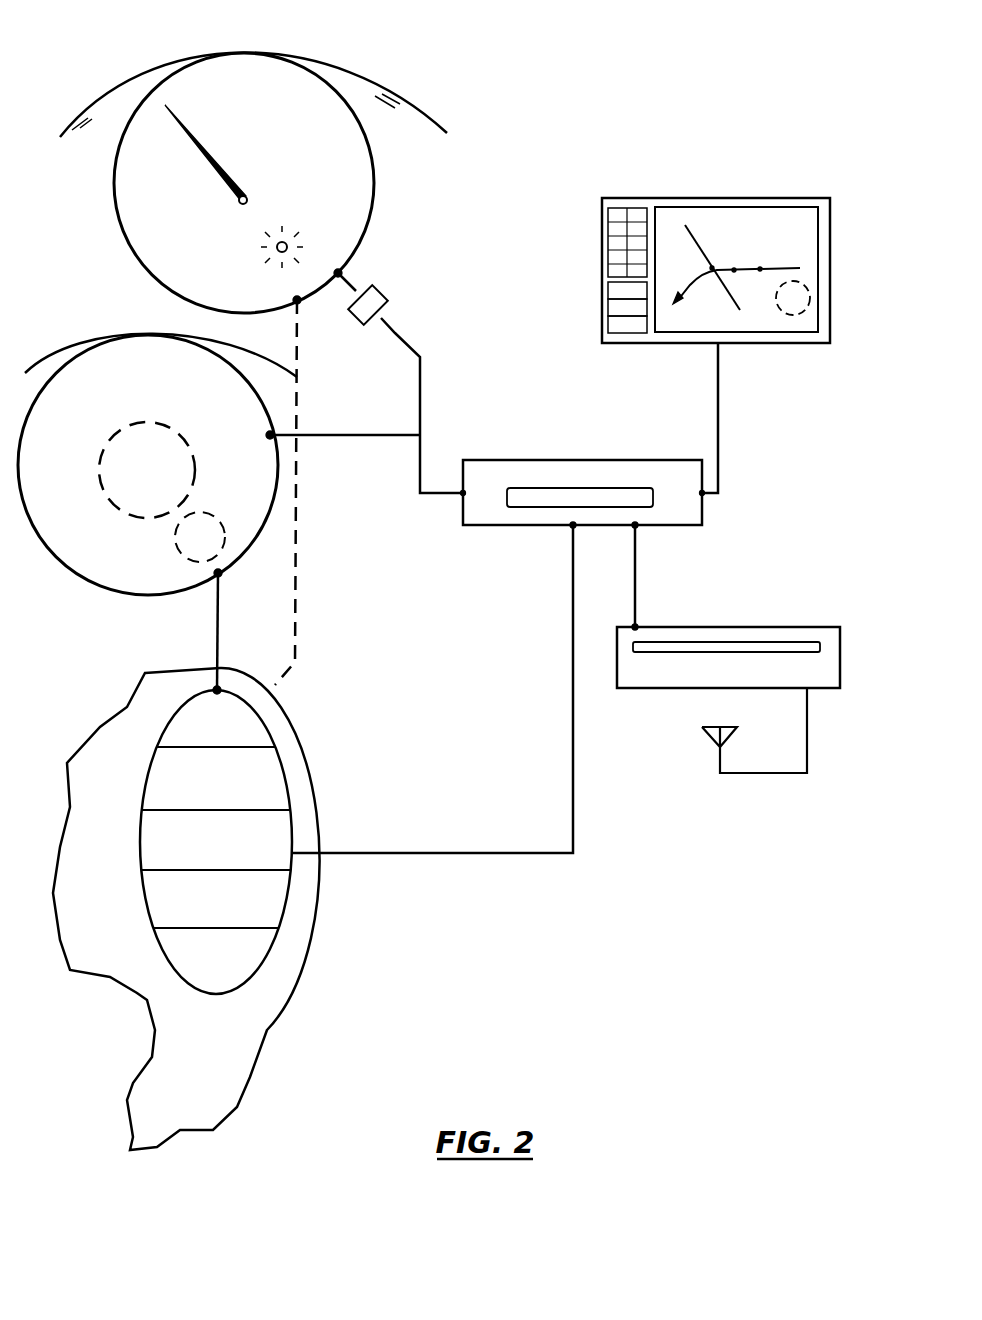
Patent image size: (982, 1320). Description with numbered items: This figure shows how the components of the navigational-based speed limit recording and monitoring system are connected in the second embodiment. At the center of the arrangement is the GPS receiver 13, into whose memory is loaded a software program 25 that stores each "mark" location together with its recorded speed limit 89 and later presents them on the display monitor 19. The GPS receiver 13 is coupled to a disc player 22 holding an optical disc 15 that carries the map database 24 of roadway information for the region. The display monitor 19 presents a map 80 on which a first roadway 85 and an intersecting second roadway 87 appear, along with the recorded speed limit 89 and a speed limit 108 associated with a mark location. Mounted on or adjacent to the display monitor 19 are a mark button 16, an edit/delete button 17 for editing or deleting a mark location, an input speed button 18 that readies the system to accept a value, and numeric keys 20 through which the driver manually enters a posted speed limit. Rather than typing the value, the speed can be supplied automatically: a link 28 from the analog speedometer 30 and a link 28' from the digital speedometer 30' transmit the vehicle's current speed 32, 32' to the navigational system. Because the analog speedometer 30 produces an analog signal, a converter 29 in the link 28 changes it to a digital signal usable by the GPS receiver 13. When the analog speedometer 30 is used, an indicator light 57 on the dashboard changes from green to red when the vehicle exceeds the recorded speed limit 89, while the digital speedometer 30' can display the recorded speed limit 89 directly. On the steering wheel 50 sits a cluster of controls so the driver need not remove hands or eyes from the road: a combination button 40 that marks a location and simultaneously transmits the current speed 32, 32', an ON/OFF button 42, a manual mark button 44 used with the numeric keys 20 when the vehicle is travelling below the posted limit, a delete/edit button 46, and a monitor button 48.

The GPS receiver 13 is at (538, 458).
The optical disc 15 is at (690, 648).
The mark button 16 is at (617, 325).
The edit/delete button 17 is at (612, 308).
The input speed button 18 is at (615, 290).
The display monitor 19 is at (647, 198).
The numeric keys 20 is at (597, 277).
The disc player 22 is at (683, 625).
The map database 24 is at (720, 647).
The software program 25 is at (585, 495).
The link 28 is at (400, 382).
The link 28' is at (343, 416).
The converter 29 is at (385, 290).
The analog speedometer 30 is at (253, 166).
The digital speedometer 30' is at (157, 443).
The current speed 32 is at (155, 138).
The current speed 32' is at (140, 451).
The combination button 40 is at (273, 773).
The ON/OFF button 42 is at (173, 730).
The manual mark button 44 is at (150, 837).
The delete/edit button 46 is at (163, 903).
The monitor button 48 is at (182, 960).
The steering wheel 50 is at (294, 702).
The indicator light 57 is at (283, 240).
The map 80 is at (713, 207).
The first roadway 85 is at (756, 268).
The second roadway 87 is at (712, 264).
The recorded speed limit 89 is at (177, 528).
The speed limit 108 is at (813, 322).